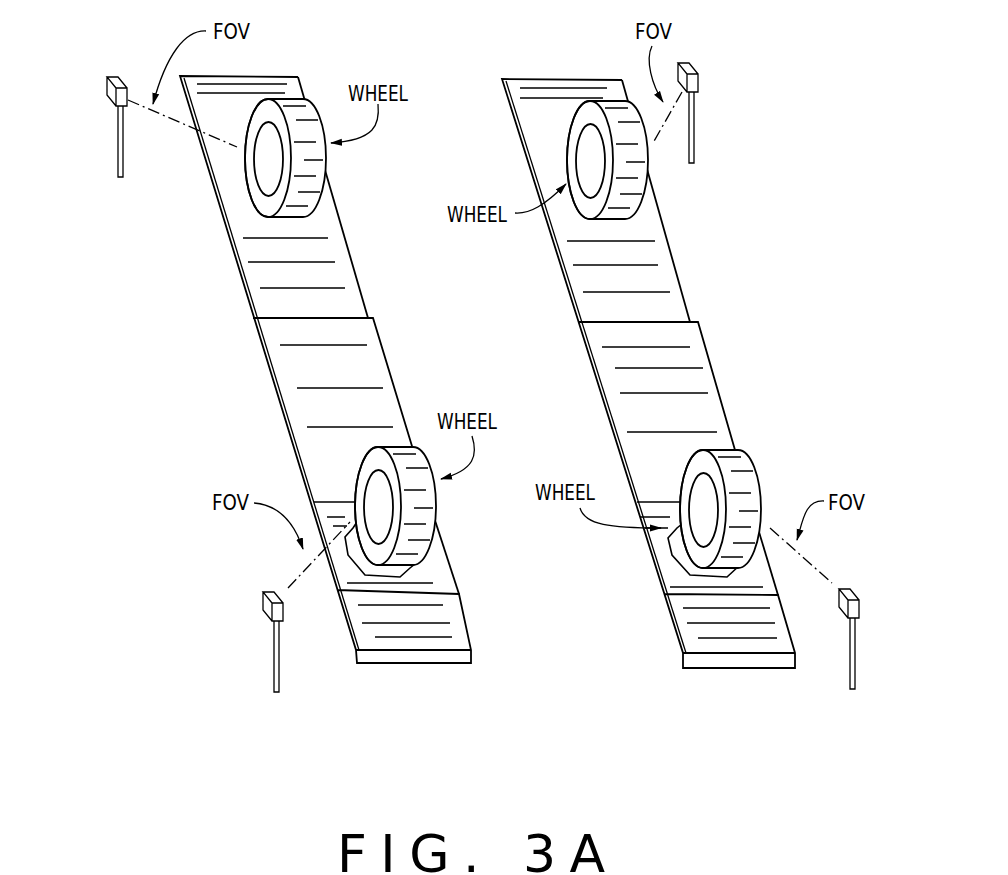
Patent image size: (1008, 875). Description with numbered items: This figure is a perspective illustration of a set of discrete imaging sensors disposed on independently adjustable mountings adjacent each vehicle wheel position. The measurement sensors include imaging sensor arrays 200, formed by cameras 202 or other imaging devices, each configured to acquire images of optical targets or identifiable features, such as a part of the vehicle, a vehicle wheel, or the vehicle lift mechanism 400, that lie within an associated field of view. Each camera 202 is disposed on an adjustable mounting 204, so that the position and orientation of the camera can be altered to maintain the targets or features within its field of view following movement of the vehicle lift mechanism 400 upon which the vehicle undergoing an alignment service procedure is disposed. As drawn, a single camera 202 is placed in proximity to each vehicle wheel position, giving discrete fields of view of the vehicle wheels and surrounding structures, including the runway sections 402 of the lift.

The imaging sensor array 200 is at (112, 84).
The camera 202 is at (116, 108).
The adjustable mounting 204 is at (111, 158).
The vehicle lift mechanism 400 is at (509, 372).
The runway section 402 is at (312, 382).